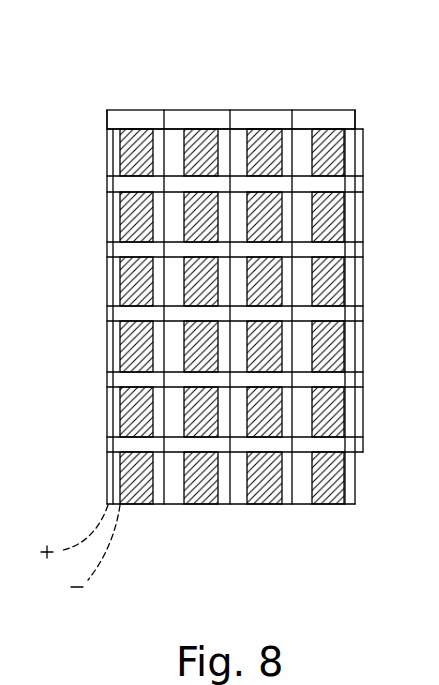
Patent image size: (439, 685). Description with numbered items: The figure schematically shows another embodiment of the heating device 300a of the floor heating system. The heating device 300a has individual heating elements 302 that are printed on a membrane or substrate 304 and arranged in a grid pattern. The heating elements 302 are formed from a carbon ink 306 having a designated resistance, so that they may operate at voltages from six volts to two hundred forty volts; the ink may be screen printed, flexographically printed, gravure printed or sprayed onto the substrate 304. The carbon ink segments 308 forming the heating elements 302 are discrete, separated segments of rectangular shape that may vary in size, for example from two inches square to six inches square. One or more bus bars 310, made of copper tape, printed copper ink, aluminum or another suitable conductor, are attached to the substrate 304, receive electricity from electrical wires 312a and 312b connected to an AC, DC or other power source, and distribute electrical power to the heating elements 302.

The heating device 300a is at (72, 168).
The heating elements 302 is at (182, 287).
The substrate 304 is at (245, 112).
The carbon ink 306 is at (332, 135).
The carbon ink segments 308 is at (348, 210).
The bus bars 310 is at (366, 456).
The electrical wire 312a is at (78, 543).
The electrical wire 312b is at (97, 563).